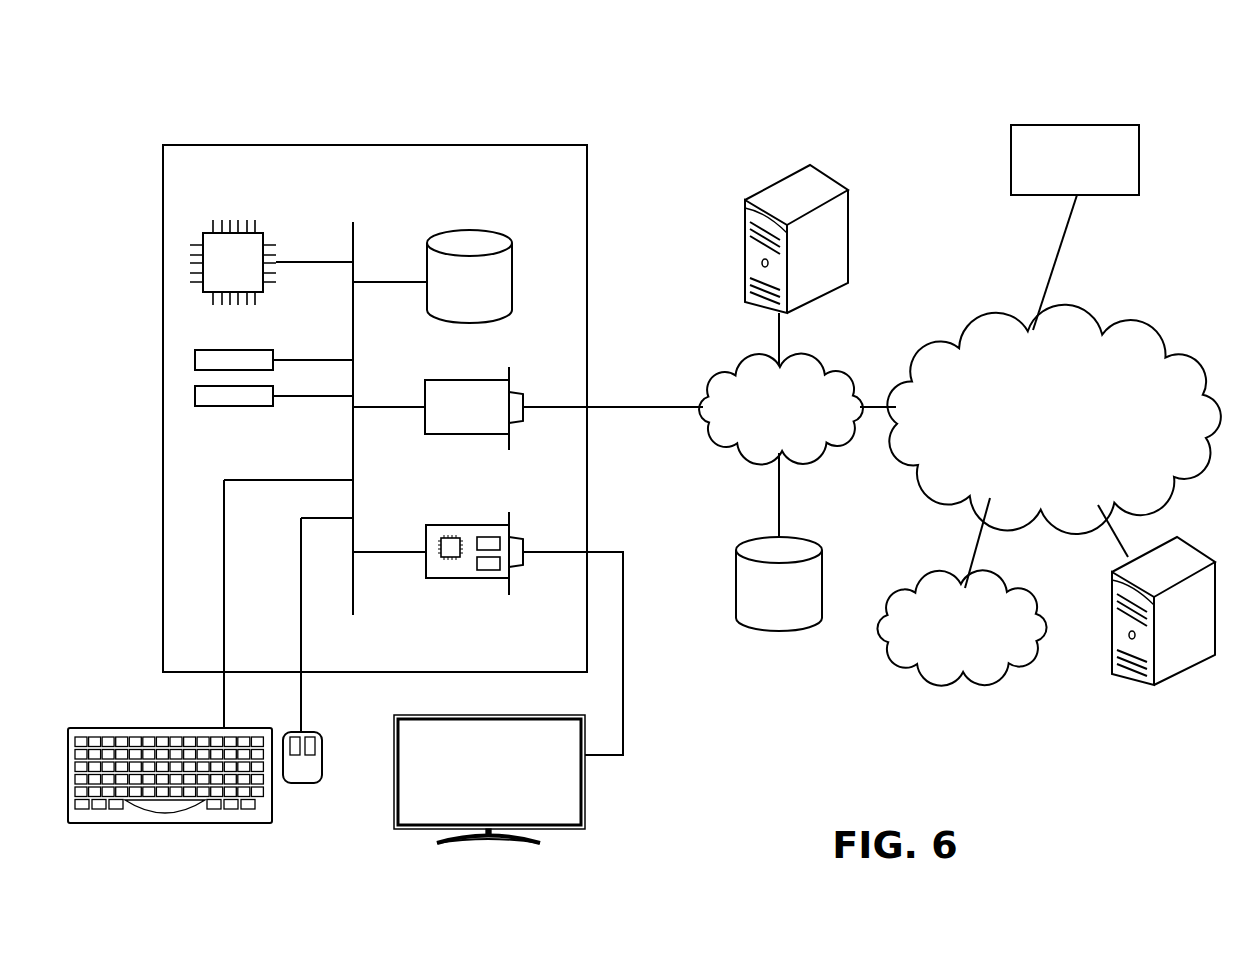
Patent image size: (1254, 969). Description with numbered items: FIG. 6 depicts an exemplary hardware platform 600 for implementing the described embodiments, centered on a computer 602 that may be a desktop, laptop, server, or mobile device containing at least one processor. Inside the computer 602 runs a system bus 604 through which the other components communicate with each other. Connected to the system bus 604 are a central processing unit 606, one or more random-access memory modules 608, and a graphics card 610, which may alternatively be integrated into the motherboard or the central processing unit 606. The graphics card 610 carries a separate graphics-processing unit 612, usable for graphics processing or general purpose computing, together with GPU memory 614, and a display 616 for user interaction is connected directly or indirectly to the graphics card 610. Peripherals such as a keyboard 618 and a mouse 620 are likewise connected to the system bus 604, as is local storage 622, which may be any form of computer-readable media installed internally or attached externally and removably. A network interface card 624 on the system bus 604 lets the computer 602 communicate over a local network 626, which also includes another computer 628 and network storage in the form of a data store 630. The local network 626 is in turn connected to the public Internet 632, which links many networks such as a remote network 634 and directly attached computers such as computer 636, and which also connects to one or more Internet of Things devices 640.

The hardware platform 600 is at (196, 110).
The computer 602 is at (540, 145).
The system bus 604 is at (353, 232).
The central processing unit 606 is at (255, 233).
The random-access memory modules 608 is at (273, 388).
The graphics card 610 is at (488, 618).
The graphics-processing unit 612 is at (450, 557).
The GPU memory 614 is at (484, 570).
The display 616 is at (585, 809).
The keyboard 618 is at (173, 823).
The mouse 620 is at (300, 784).
The local storage 622 is at (512, 262).
The network interface card 624 is at (425, 393).
The local network 626 is at (838, 365).
The computer 628 is at (835, 178).
The data store 630 is at (815, 540).
The public Internet 632 is at (1097, 328).
The remote network 634 is at (1020, 585).
The computer 636 is at (1190, 543).
The Internet of Things devices 640 is at (1125, 125).